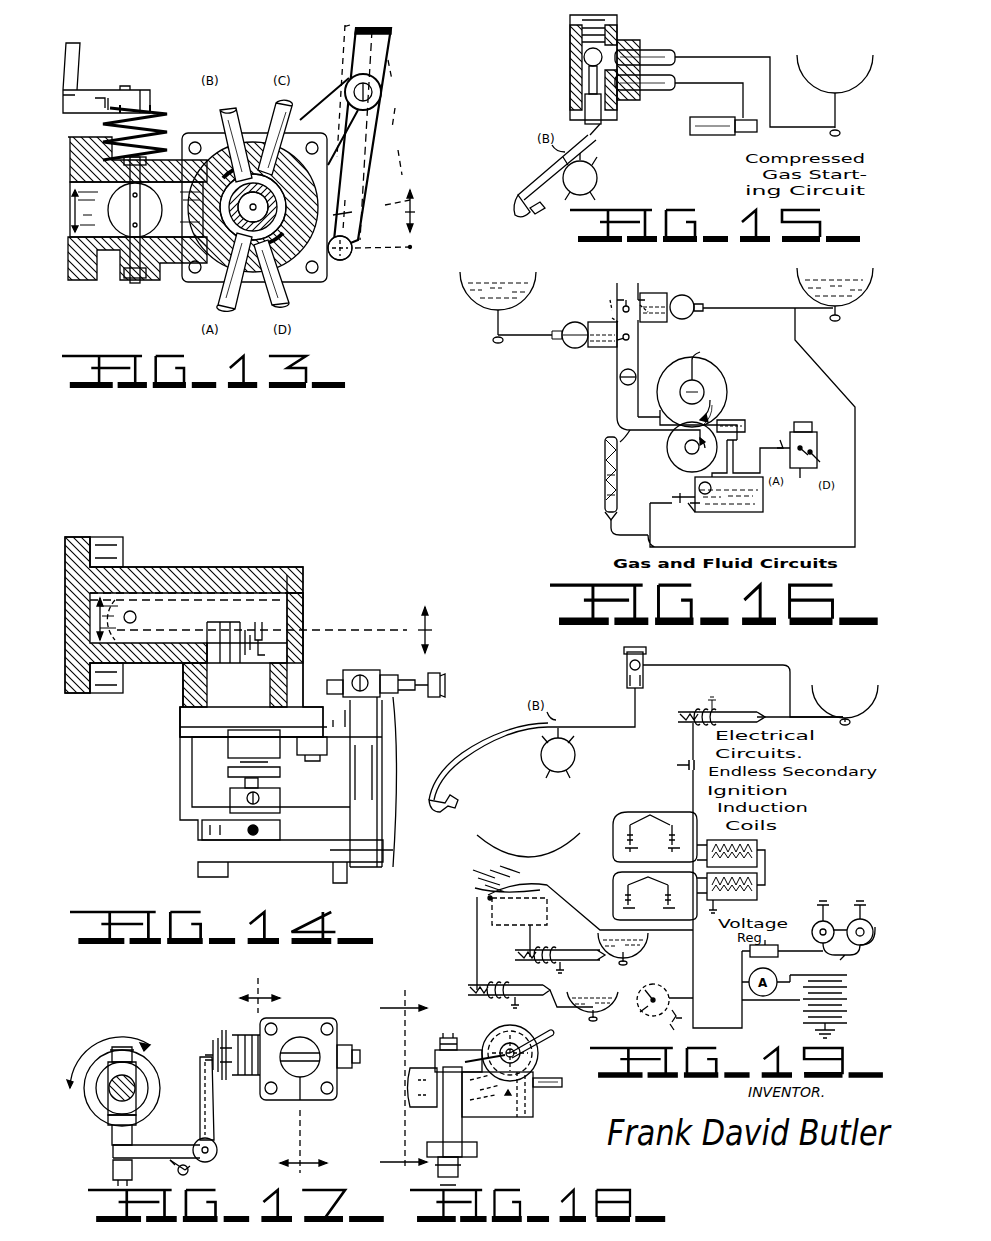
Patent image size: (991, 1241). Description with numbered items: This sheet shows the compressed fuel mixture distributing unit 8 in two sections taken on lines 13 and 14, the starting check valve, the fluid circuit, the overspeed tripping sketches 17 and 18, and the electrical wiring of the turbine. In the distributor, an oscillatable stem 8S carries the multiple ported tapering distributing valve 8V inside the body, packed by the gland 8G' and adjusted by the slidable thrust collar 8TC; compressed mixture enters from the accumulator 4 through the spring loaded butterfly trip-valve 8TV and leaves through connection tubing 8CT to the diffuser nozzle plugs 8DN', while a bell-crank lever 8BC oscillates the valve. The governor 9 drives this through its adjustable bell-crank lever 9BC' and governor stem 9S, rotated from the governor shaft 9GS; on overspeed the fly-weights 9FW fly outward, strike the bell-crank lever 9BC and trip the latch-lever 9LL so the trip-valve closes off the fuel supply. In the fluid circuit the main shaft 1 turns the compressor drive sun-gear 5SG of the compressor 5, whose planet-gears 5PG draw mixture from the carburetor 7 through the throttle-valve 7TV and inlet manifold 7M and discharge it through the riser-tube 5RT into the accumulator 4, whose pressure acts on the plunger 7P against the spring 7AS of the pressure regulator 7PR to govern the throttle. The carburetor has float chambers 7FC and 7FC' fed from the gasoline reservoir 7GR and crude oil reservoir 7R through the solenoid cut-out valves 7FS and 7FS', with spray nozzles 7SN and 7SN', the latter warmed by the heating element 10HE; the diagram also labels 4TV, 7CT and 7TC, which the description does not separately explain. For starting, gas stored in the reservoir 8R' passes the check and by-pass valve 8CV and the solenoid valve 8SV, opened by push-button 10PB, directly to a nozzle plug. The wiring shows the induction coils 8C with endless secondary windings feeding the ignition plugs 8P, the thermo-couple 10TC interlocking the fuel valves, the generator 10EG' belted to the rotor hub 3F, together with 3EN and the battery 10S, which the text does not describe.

In FIG. 16, the main shaft 1 is at (695, 374).
In FIG. 16, the combined liquid fuel sump and compressed fuel mixture accumulator 4 is at (763, 498).
In FIG. 16, the tank valve 4TV is at (704, 505).
In FIG. 16, the elastic fuel mixture compressor 5 is at (721, 405).
In FIG. 16, the compressor drive sun-gear 5SG is at (722, 380).
In FIG. 16, the riser-tube 5RT is at (746, 425).
In FIG. 16, the planet-gears 5PG is at (668, 460).
In FIG. 16, the carburetor 7 is at (640, 350).
In FIG. 16, the fuel reservoir 7GR is at (468, 290).
In FIG. 19, the fuel reservoir 7GR is at (597, 1014).
In FIG. 16, the fuel reservoir 7R is at (803, 275).
In FIG. 19, the fuel reservoir 7R is at (645, 938).
In FIG. 16, the automatic cut-out valve 7FS is at (569, 324).
In FIG. 19, the automatic cut-out valve 7FS is at (494, 987).
In FIG. 16, the float chamber 7FC is at (593, 315).
In FIG. 16, the spray-nozzle 7SN is at (590, 350).
In FIG. 16, the spray-nozzle 7SN' is at (610, 285).
In FIG. 19, the spray-nozzle 7SN' is at (665, 988).
In FIG. 16, the float chamber 7FC' is at (654, 295).
In FIG. 16, the automatic cut-out valve 7FS' is at (694, 296).
In FIG. 19, the automatic cut-out valve 7FS' is at (561, 968).
In FIG. 16, the throttle-valve 7TV is at (614, 373).
In FIG. 16, the inlet manifold 7M is at (635, 444).
In FIG. 16, the spring 7AS is at (605, 456).
In FIG. 16, the plunger 7P is at (605, 478).
In FIG. 16, the pressure regulator 7PR is at (605, 500).
In FIG. 16, the conduit tube 7CT is at (615, 540).
In FIG. 16, the tube circuit 7TC is at (770, 546).
In FIG. 13, the combined electrical ignition and compressed fuel mixture distributing unit 8 is at (190, 272).
In FIG. 15, the combined electrical ignition and compressed fuel mixture distributing unit 8 is at (597, 176).
In FIG. 16, the combined electrical ignition and compressed fuel mixture distributing unit 8 is at (817, 445).
In FIG. 14, the combined electrical ignition and compressed fuel mixture distributing unit 8 is at (290, 567).
In FIG. 19, the combined electrical ignition and compressed fuel mixture distributing unit 8 is at (575, 756).
In FIG. 17, the combined electrical ignition and compressed fuel mixture distributing unit 8 is at (285, 1095).
In FIG. 13, the trip-valve 8TV is at (130, 235).
In FIG. 16, the trip-valve 8TV is at (781, 440).
In FIG. 14, the trip-valve 8TV is at (145, 600).
In FIG. 17, the trip-valve 8TV is at (304, 1095).
In FIG. 18, the trip-valve 8TV is at (495, 1098).
In FIG. 13, the distributing valve 8V is at (237, 218).
In FIG. 14, the distributing valve 8V is at (292, 600).
In FIG. 13, the connection tubing means 8CT is at (250, 102).
In FIG. 15, the connection tubing means 8CT is at (530, 178).
In FIG. 19, the connection tubing means 8CT is at (485, 733).
In FIG. 15, the combined non-return-check and charging by-pass valve 8CV is at (570, 60).
In FIG. 19, the combined non-return-check and charging by-pass valve 8CV is at (627, 670).
In FIG. 15, the solenoid operated valve 8SV is at (702, 135).
In FIG. 19, the solenoid operated valve 8SV is at (695, 710).
In FIG. 15, the reservoir 8R' is at (835, 87).
In FIG. 19, the reservoir 8R' is at (845, 692).
In FIG. 15, the diffuser nozzle plugs 8DN' is at (507, 204).
In FIG. 19, the diffuser nozzle plugs 8DN' is at (464, 799).
In FIG. 14, the gland means 8G' is at (210, 774).
In FIG. 14, the oscillatable stem 8S is at (245, 783).
In FIG. 14, the thrust collar means 8TC is at (285, 800).
In FIG. 14, the bell-crank lever 8BC is at (205, 832).
In FIG. 19, the ignition plugs 8P is at (642, 888).
In FIG. 19, the electrical induction coils 8C is at (765, 840).
In FIG. 17, the combined governor and overspeed tripping device 9 is at (90, 1100).
In FIG. 18, the combined governor and overspeed tripping device 9 is at (490, 1110).
In FIG. 13, the bell-crank lever 9BC is at (106, 78).
In FIG. 17, the bell-crank lever 9BC is at (210, 1150).
In FIG. 18, the bell-crank lever 9BC is at (425, 1126).
In FIG. 13, the adjustable governor bell-crank lever 9BC' is at (360, 142).
In FIG. 14, the adjustable governor bell-crank lever 9BC' is at (371, 782).
In FIG. 13, the latch-lever 9LL is at (118, 100).
In FIG. 17, the latch-lever 9LL is at (205, 1050).
In FIG. 18, the latch-lever 9LL is at (468, 1052).
In FIG. 14, the governor stem 9S is at (320, 675).
In FIG. 18, the governor stem 9S is at (547, 1090).
In FIG. 17, the fly-weights 9FW is at (125, 1050).
In FIG. 18, the fly-weights 9FW is at (440, 1040).
In FIG. 17, the governor shaft 9GS is at (190, 1124).
In FIG. 18, the governor shaft 9GS is at (410, 1095).
In FIG. 16, the electrical heating element 10HE is at (650, 330).
In FIG. 19, the electrical heating element 10HE is at (640, 1013).
In FIG. 19, the electrical push-button 10PB is at (676, 764).
In FIG. 19, the thermo-couple 10TC is at (585, 937).
In FIG. 19, the electrical generator 10EG' is at (835, 904).
In FIG. 19, the storage battery 10S is at (745, 1015).
In FIG. 19, the upper flanged portion 3F is at (565, 850).
In FIG. 19, the engine 3EN is at (520, 866).
In FIG. 14, the section line 13— 13 is at (265, 630).
In FIG. 13, the section line 14— 14 is at (258, 219).
In FIG. 18, the tripping mechanism sketch 17 is at (401, 1087).
In FIG. 17, the tripping mechanism sketch 18 is at (278, 1073).